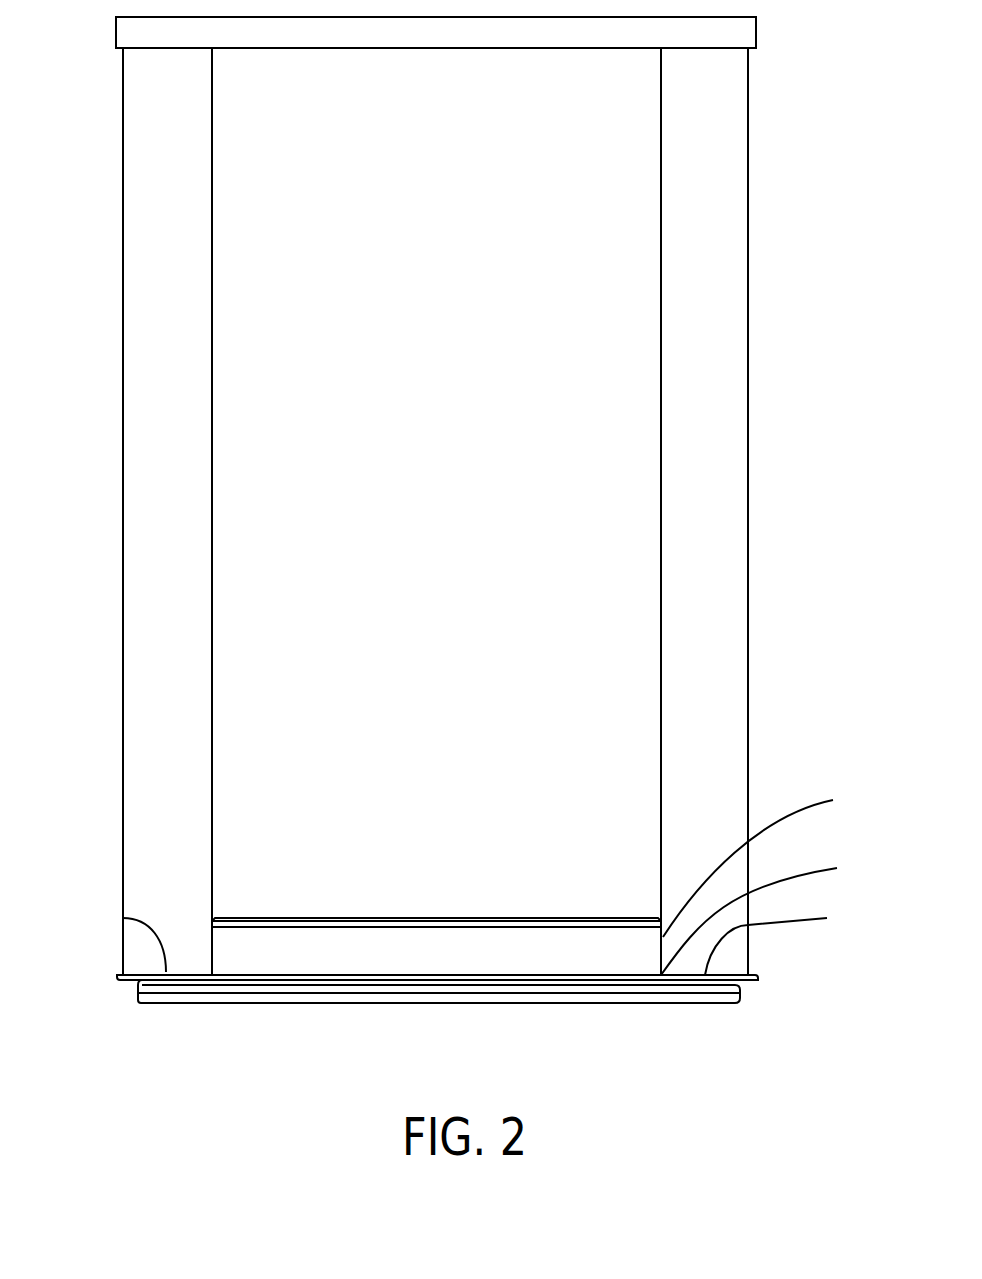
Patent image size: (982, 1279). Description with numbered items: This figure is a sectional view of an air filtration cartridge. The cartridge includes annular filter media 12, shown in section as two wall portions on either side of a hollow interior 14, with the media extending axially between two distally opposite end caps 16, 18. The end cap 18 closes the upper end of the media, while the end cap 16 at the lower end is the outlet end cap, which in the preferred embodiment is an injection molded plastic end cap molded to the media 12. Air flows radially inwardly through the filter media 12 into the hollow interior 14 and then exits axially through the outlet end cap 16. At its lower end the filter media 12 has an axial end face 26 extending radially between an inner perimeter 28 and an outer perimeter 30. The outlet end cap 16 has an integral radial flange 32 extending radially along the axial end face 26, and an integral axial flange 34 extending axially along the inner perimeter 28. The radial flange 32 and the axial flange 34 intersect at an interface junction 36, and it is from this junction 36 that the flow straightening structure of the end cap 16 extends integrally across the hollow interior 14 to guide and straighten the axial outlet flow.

The filter media 12 is at (147, 323).
The hollow interior 14 is at (464, 369).
The outlet end cap 16 is at (753, 977).
The end cap 18 is at (756, 33).
The axial end face 26 is at (123, 918).
The inner perimeter 28 is at (212, 714).
The outer perimeter 30 is at (123, 705).
The radial flange 32 is at (782, 937).
The axial flange 34 is at (764, 860).
The interface junction 36 is at (765, 913).